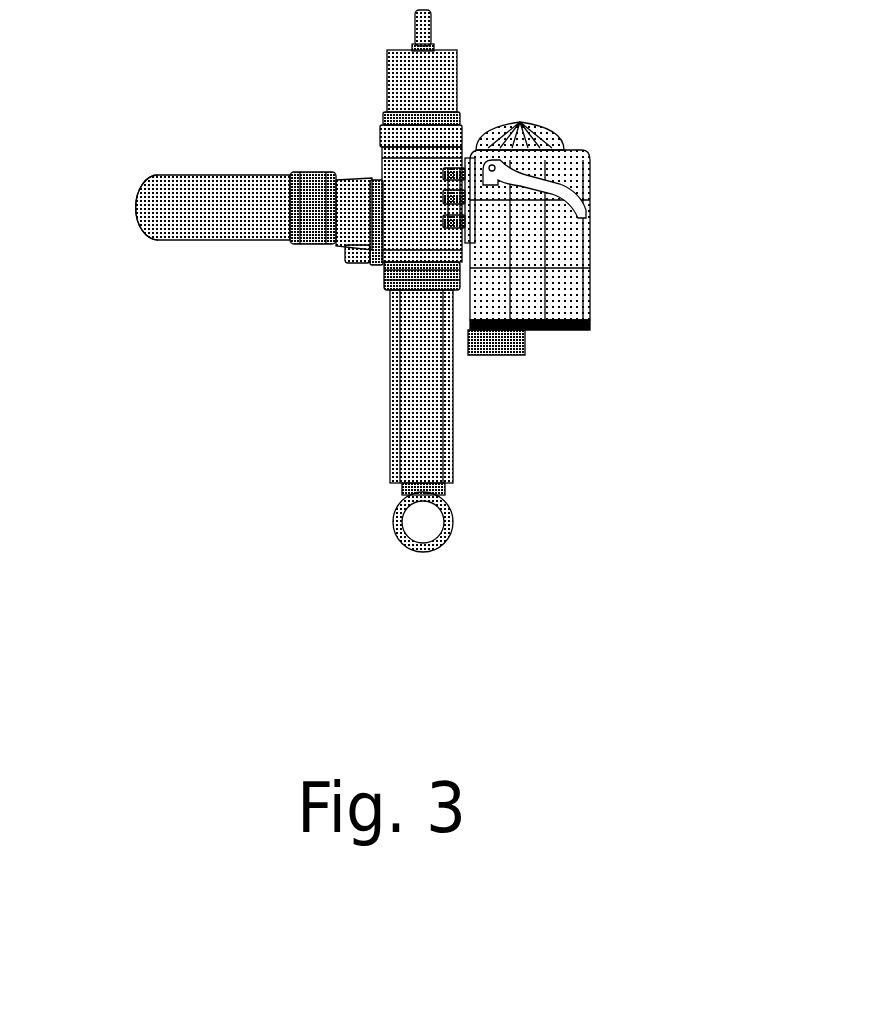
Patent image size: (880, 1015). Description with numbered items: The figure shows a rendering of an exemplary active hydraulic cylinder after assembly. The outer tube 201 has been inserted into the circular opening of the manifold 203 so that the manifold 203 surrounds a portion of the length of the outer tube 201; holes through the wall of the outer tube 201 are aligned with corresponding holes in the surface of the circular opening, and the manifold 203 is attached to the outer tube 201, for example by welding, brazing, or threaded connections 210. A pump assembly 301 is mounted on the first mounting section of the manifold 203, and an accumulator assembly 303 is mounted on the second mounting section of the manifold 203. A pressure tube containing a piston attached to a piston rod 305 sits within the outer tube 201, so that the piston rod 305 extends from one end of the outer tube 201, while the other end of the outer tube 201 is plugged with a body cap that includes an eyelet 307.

The outer tube 201 is at (398, 392).
The manifold 203 is at (438, 145).
The threaded connections 210 is at (388, 278).
The pump assembly 301 is at (552, 168).
The accumulator assembly 303 is at (230, 222).
The piston rod 305 is at (417, 18).
The eyelet 307 is at (396, 520).